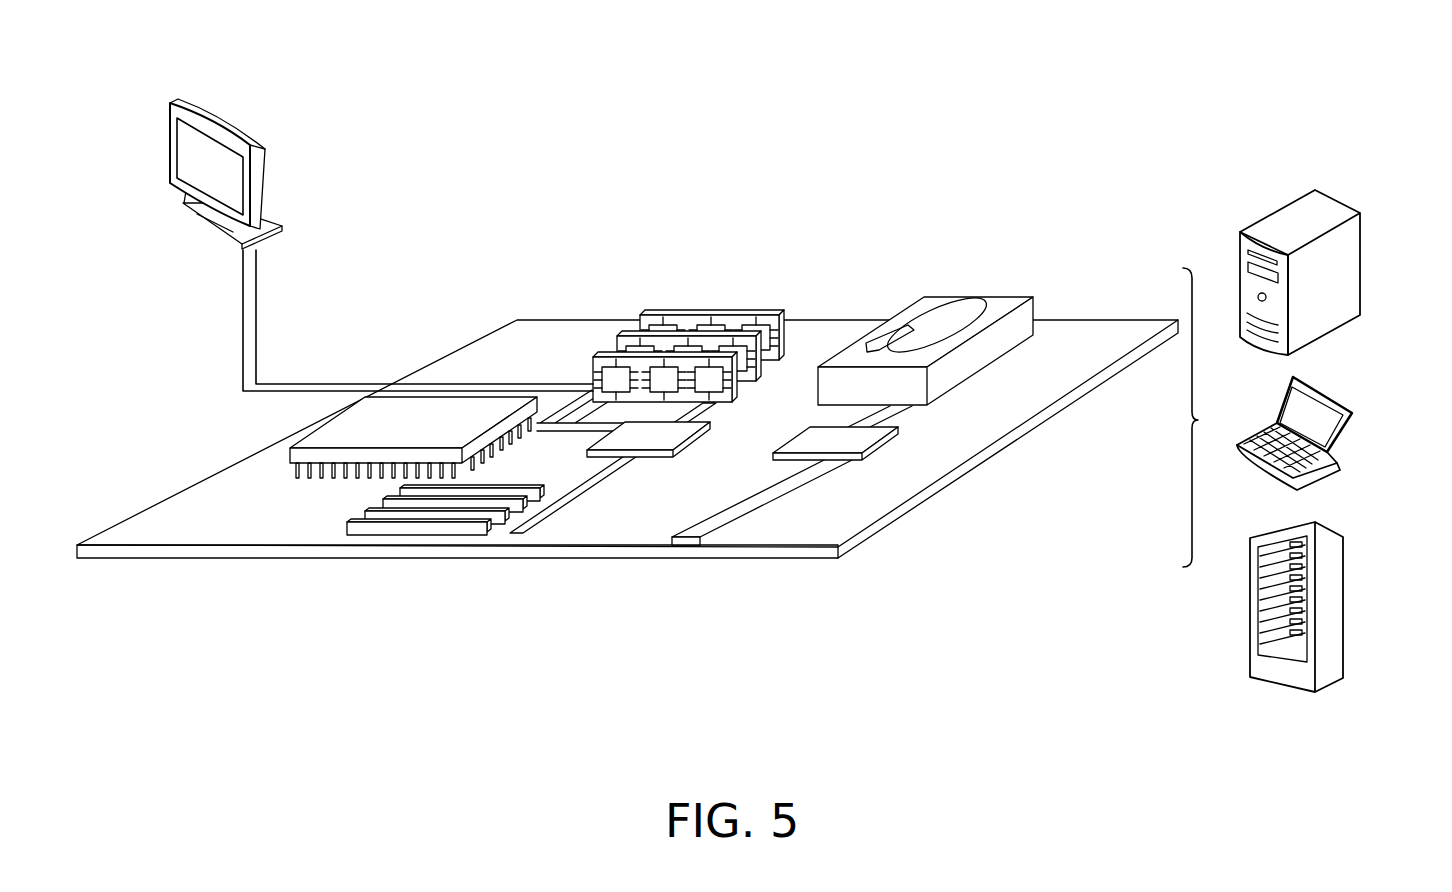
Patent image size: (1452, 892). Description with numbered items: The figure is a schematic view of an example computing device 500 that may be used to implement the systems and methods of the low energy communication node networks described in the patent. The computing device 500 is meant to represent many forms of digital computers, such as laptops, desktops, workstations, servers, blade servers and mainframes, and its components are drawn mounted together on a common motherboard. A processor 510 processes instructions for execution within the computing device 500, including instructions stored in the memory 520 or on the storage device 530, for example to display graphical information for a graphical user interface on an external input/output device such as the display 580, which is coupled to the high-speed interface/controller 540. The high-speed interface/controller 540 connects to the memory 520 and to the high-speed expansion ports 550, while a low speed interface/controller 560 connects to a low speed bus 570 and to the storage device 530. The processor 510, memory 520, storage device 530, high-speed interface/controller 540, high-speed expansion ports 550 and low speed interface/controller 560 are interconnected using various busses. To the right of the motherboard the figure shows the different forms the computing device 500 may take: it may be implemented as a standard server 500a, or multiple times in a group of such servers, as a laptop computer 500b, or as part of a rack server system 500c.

The computing device 500 is at (994, 83).
The standard server 500a is at (1272, 208).
The laptop computer 500b is at (1333, 398).
The rack server system 500c is at (1342, 584).
The processor 510 is at (290, 451).
The memory 520 is at (708, 313).
The storage device 530 is at (978, 296).
The high-speed interface/controller 540 is at (653, 456).
The high-speed expansion ports 550 is at (347, 526).
The low speed interface/controller 560 is at (826, 440).
The low speed bus 570 is at (704, 547).
The display 580 is at (170, 148).